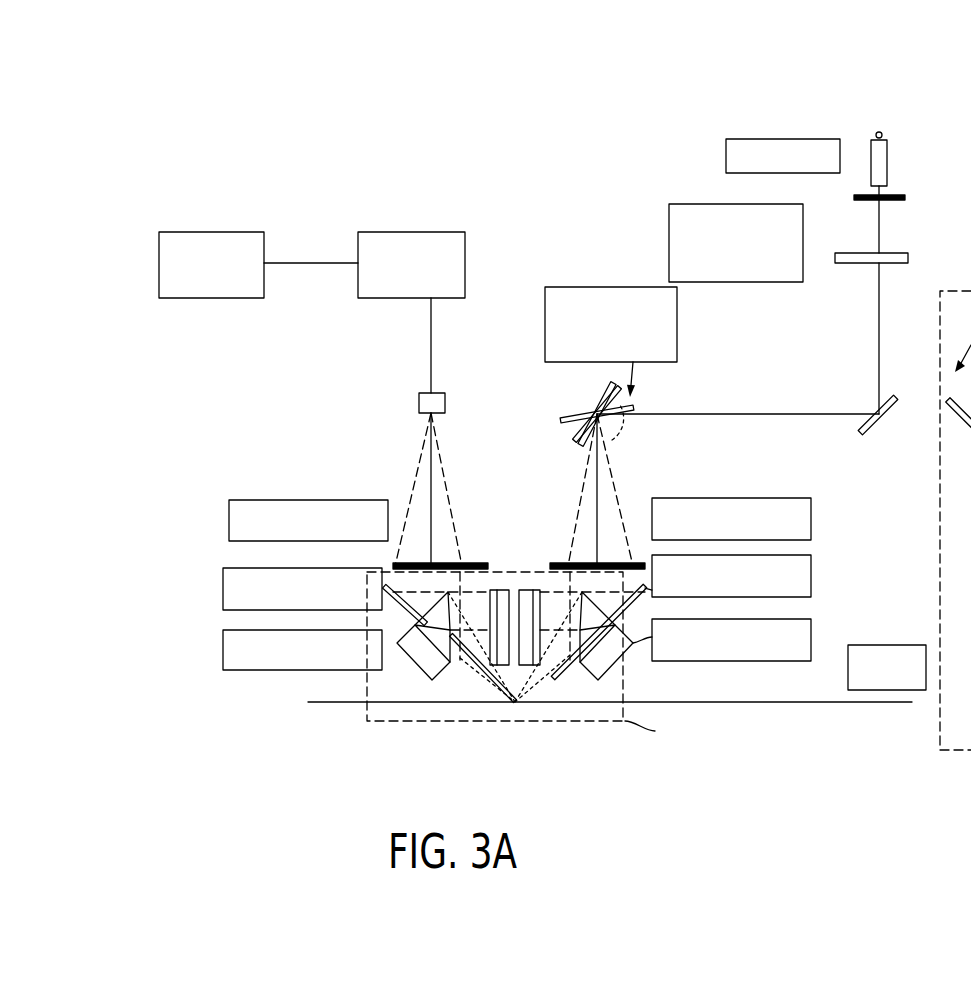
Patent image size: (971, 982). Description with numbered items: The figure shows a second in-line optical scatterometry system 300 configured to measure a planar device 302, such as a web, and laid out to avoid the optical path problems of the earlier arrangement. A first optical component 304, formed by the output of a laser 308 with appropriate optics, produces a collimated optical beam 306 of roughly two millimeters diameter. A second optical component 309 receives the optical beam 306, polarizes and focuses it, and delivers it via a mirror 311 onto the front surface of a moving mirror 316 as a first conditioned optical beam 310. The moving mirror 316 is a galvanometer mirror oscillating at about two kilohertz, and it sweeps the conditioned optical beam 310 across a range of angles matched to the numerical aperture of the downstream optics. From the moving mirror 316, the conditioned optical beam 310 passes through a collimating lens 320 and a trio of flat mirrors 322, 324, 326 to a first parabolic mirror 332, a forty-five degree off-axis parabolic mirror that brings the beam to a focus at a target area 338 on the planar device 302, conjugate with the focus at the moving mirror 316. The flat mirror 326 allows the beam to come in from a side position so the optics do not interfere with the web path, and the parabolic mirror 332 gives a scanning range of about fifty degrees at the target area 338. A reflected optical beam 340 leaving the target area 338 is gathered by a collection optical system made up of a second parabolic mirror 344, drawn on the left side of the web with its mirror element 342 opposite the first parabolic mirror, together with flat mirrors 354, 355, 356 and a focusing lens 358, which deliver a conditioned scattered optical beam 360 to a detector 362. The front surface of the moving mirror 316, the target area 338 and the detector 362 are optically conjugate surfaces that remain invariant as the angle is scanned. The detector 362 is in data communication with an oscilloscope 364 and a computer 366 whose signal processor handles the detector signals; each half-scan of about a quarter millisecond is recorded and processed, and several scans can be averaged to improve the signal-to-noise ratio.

The in-line optical scatterometry system 300 is at (172, 130).
The planar device 302 is at (318, 704).
The first optical component 304 is at (890, 152).
The optical beam 306 is at (879, 226).
The laser 308 is at (726, 155).
The second optical component 309 is at (894, 244).
The first conditioned optical beam 310 is at (879, 328).
The mirror 311 is at (890, 412).
The moving mirror 316 is at (550, 401).
The collimating lens 320 is at (813, 515).
The flat mirror 322 is at (812, 588).
The flat mirror 324 is at (727, 605).
The flat mirror 326 is at (790, 560).
The first parabolic mirror 332 is at (812, 637).
The target area 338 is at (536, 716).
The reflected optical beam 340 is at (472, 689).
The parabolic mirror 342 is at (418, 656).
The second parabolic mirror 344 is at (222, 650).
The flat mirror 354 is at (222, 590).
The flat mirror 355 is at (283, 575).
The flat mirror 356 is at (347, 613).
The focusing lens 358 is at (228, 520).
The conditioned scattered optical beam 360 is at (437, 425).
The detector 362 is at (419, 399).
The oscilloscope 364 is at (416, 232).
The computer 366 is at (210, 232).